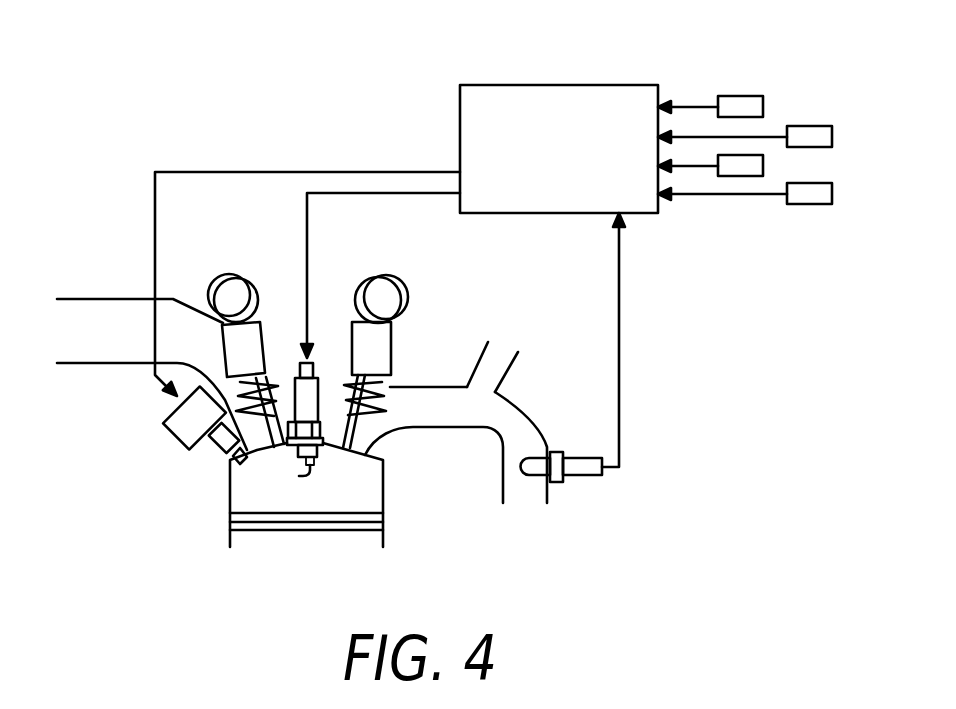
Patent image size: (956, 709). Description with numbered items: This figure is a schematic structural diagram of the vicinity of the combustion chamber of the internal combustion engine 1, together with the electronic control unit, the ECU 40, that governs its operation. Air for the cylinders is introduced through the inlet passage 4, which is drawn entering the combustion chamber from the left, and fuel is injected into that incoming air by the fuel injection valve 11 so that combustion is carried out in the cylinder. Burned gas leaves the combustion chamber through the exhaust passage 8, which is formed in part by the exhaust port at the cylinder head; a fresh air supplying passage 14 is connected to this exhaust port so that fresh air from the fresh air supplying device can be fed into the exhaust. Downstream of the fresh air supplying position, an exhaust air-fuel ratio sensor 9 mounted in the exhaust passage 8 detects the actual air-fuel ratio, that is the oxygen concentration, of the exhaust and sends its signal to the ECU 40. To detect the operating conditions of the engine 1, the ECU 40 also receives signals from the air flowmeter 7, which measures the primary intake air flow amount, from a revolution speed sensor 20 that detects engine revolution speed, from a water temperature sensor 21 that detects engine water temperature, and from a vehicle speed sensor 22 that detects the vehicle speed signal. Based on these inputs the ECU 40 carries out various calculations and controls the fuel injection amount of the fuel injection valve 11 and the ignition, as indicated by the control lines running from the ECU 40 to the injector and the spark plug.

The internal combustion engine 1 is at (130, 566).
The inlet passage 4 is at (57, 299).
The air flowmeter 7 is at (755, 96).
The exhaust passage 8 is at (517, 422).
The exhaust air-fuel ratio sensor 9 is at (590, 470).
The fuel injection valve 11 is at (180, 430).
The fresh air supplying passage 14 is at (477, 360).
The revolution speed sensor 20 is at (822, 126).
The water temperature sensor 21 is at (740, 176).
The vehicle speed sensor 22 is at (818, 204).
The ECU 40 is at (550, 85).